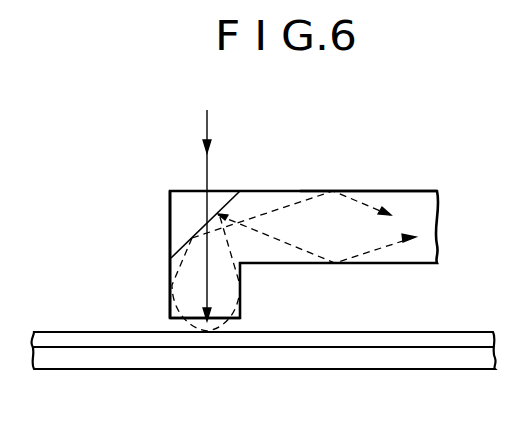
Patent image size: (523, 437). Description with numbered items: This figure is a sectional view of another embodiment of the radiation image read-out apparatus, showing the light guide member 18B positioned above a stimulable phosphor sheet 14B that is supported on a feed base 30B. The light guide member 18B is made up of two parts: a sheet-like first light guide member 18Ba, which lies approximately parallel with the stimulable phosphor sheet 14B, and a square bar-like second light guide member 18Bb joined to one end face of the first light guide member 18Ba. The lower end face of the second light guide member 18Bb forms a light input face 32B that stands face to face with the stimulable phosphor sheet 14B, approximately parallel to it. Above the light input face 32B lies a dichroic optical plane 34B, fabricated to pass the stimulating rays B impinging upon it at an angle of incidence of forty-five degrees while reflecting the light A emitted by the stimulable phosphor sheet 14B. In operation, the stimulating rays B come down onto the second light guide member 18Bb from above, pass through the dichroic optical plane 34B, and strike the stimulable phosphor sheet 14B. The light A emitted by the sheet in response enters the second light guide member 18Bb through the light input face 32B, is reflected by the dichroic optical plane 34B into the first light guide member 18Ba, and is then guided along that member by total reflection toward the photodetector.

The light guide member 18B is at (362, 179).
The first light guide member 18Ba is at (397, 191).
The second light guide member 18Bb is at (170, 225).
The dichroic optical plane 34B is at (226, 201).
The light input face 32B is at (177, 323).
The stimulable phosphor sheet 14B is at (427, 332).
The feed base 30B is at (360, 370).
The light emitted by the stimulable phosphor sheet A is at (298, 201).
The stimulating rays B is at (207, 122).